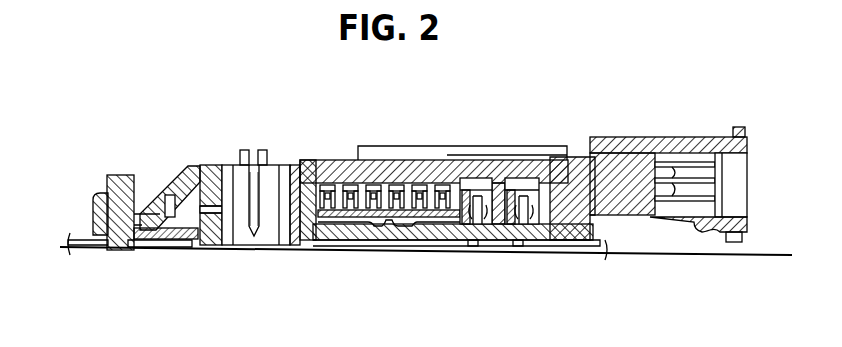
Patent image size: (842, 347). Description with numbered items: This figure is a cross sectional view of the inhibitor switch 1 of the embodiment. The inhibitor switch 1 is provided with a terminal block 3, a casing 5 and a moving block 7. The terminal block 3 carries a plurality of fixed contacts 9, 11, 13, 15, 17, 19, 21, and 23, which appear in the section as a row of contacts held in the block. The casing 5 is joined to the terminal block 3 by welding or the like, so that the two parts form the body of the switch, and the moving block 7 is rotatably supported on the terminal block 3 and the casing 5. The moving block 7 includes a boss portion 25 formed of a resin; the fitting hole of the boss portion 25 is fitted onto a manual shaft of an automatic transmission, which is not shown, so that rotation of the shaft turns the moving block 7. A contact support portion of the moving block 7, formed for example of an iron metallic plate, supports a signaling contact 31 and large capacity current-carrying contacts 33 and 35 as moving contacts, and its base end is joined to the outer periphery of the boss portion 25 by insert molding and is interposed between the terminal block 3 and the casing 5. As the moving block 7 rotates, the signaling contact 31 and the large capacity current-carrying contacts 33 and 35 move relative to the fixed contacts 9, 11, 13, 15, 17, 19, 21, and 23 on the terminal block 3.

The inhibitor switch 1 is at (634, 126).
The terminal block 3 is at (567, 158).
The casing 5 is at (564, 256).
The moving block 7 is at (351, 240).
The fixed contact 9 is at (321, 162).
The fixed contact 11 is at (350, 162).
The fixed contact 13 is at (366, 170).
The fixed contact 15 is at (385, 162).
The fixed contact 17 is at (405, 168).
The fixed contact 19 is at (431, 162).
The fixed contact 21 is at (474, 167).
The fixed contact 23 is at (527, 167).
The boss portion 25 is at (214, 162).
The signaling contact 31 is at (307, 162).
The large capacity current-carrying contact 33 is at (472, 246).
The large capacity current-carrying contact 35 is at (517, 246).